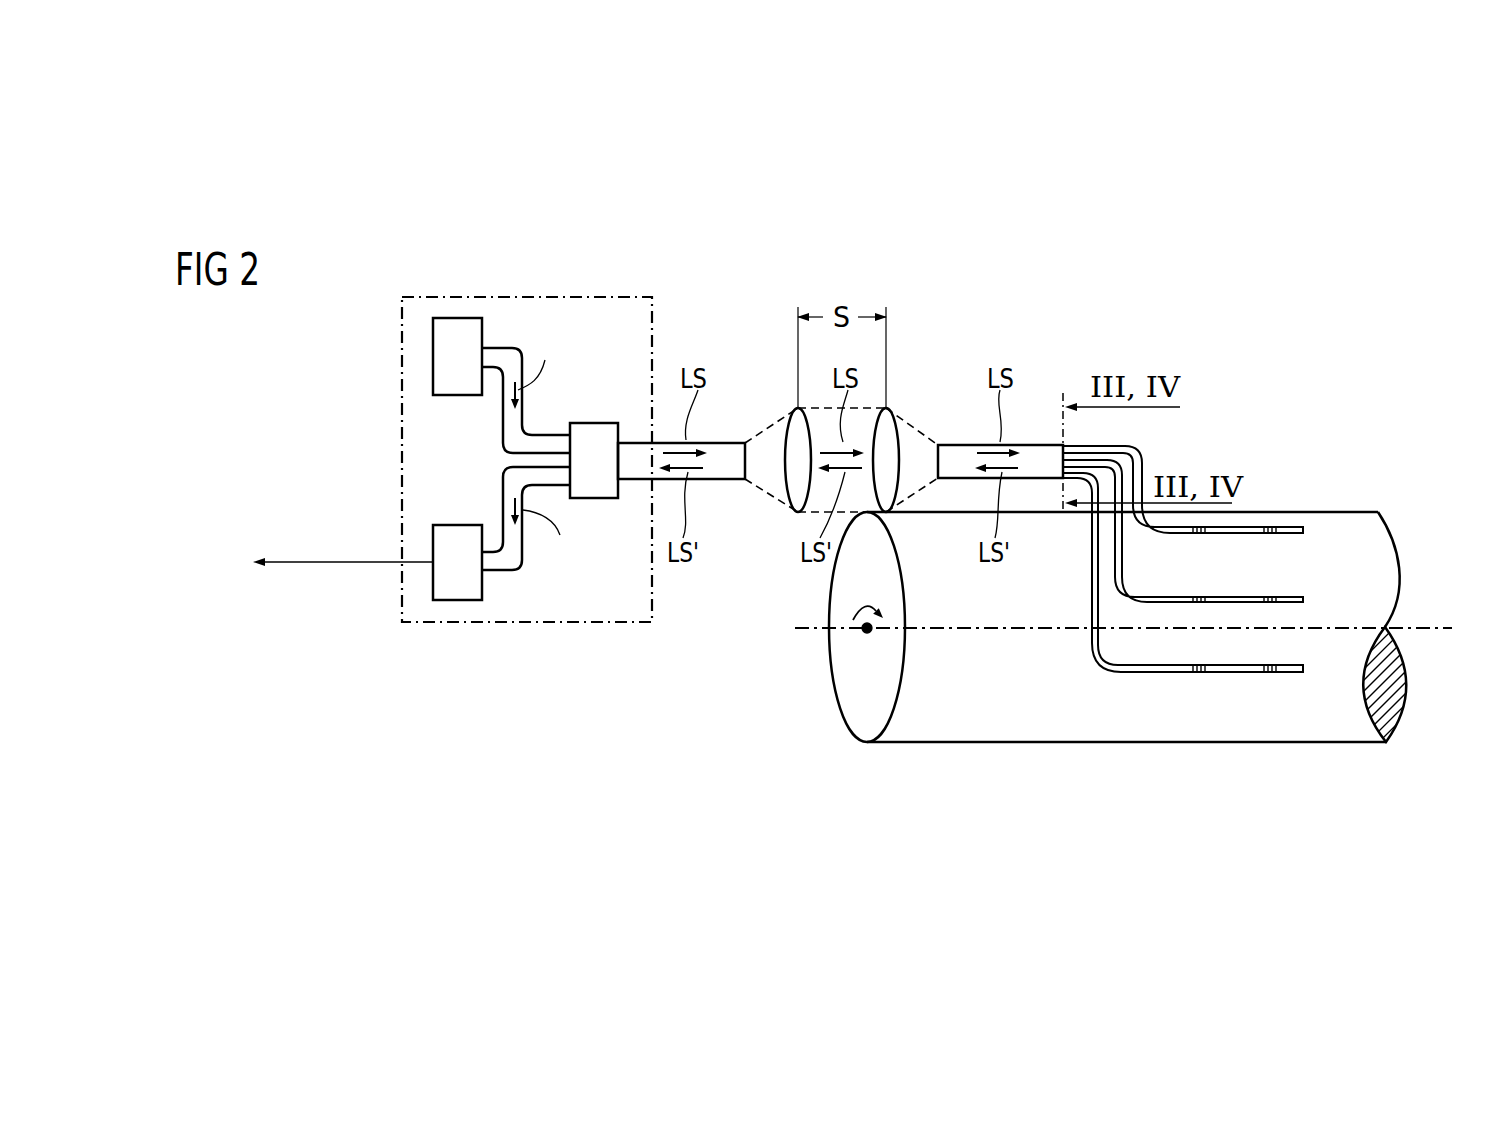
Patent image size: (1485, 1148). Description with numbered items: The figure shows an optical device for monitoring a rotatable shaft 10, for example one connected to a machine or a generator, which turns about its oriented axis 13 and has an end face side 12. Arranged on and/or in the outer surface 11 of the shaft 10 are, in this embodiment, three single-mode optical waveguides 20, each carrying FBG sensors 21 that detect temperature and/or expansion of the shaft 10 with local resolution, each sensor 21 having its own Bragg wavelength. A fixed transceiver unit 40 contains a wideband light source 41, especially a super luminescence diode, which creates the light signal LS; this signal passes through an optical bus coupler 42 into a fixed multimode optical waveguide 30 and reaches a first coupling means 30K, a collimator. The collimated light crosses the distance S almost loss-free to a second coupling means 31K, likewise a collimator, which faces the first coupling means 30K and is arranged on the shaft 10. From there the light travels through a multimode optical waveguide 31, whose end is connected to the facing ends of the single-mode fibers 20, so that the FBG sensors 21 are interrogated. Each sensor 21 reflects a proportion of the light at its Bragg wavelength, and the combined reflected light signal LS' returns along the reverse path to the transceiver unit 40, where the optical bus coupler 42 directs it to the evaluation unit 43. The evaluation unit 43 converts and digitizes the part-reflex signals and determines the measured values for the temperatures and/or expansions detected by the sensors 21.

The shaft 10 is at (1040, 720).
The outer surface 11 is at (1240, 748).
The end face side 12 is at (852, 683).
The axis 13 is at (1418, 627).
The single-mode optical waveguide 20 is at (1303, 532).
The FBG sensor 21 is at (1272, 525).
The multi-mode optical waveguide 30 is at (732, 452).
The first coupling means 30K is at (797, 472).
The multimode optical waveguide 31 is at (1040, 450).
The second coupling means 31K is at (887, 445).
The transceiver unit 40 is at (452, 501).
The light source 41 is at (456, 397).
The optical bus coupler 42 is at (603, 430).
The evaluation unit 43 is at (457, 524).